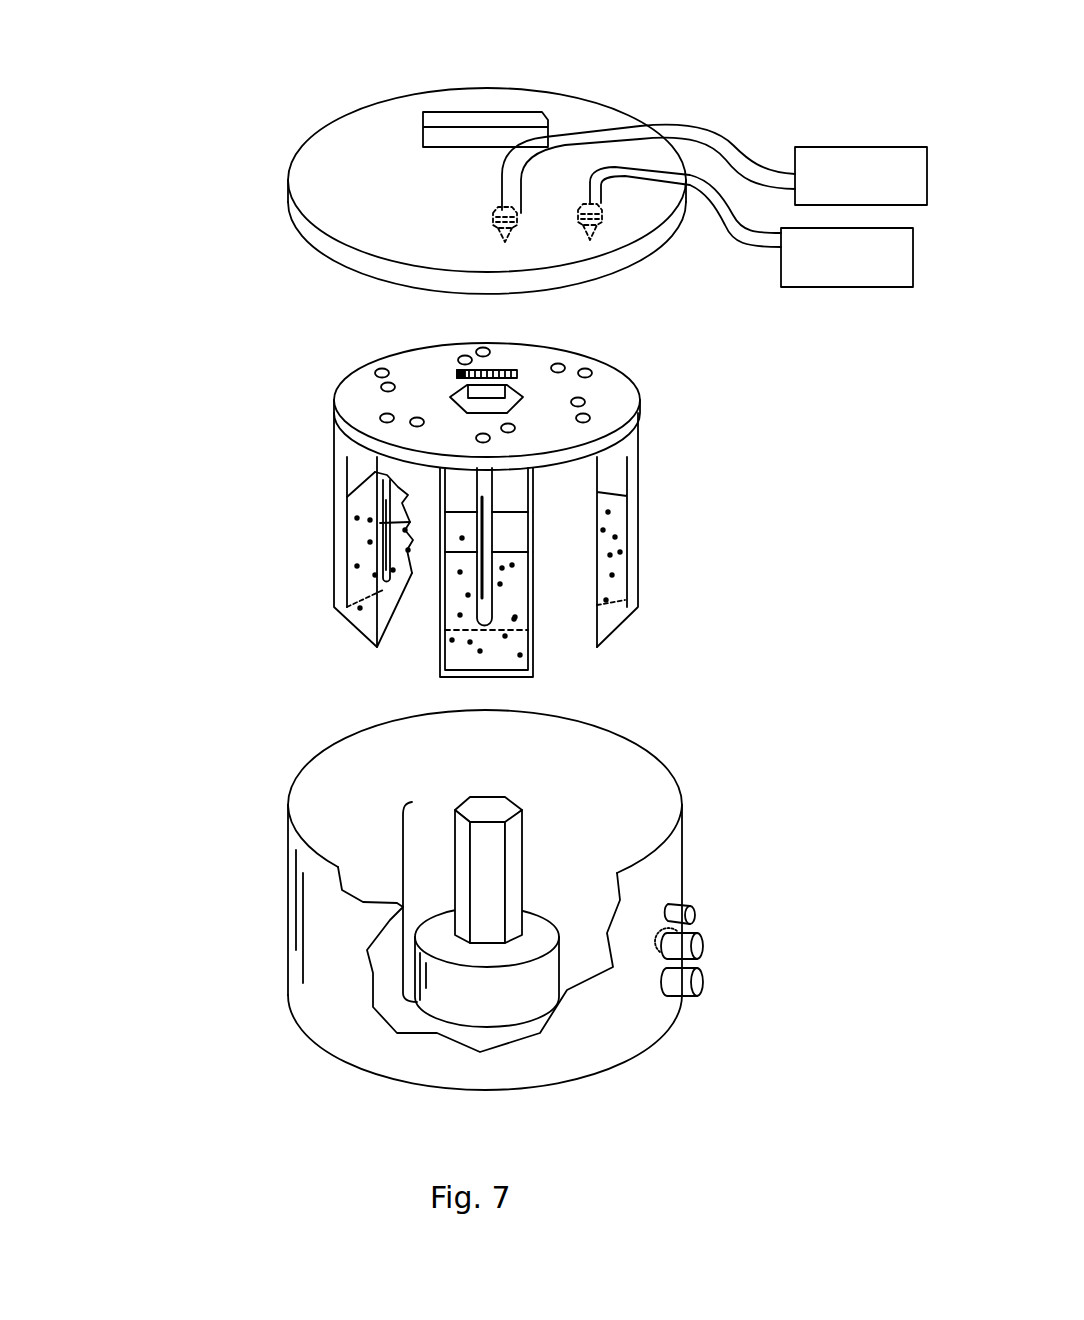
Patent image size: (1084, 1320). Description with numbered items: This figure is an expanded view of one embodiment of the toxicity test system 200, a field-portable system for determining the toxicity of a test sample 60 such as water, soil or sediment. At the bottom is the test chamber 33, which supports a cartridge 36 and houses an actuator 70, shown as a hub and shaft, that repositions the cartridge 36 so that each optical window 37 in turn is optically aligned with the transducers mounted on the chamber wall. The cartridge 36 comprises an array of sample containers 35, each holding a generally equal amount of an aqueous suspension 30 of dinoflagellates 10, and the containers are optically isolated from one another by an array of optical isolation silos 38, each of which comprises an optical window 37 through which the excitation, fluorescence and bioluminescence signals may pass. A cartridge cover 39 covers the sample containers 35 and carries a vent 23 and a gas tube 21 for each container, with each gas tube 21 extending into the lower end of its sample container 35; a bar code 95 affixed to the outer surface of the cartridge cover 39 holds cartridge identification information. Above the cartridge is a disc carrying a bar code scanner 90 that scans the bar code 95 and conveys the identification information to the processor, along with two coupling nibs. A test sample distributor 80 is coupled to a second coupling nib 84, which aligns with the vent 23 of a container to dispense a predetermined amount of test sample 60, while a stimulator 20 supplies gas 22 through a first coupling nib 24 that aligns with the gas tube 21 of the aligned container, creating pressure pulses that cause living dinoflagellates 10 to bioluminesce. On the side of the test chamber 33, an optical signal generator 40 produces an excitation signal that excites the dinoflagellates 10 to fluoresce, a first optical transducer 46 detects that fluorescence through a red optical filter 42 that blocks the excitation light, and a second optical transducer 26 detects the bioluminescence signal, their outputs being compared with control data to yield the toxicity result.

The toxicity test system 200 is at (156, 118).
The bar code scanner 90 is at (530, 117).
The second coupling nib 84 is at (493, 236).
The first coupling nib 24 is at (613, 223).
The test sample distributor 80 is at (868, 147).
The test sample 60 is at (877, 191).
The stimulator 20 is at (847, 293).
The gas 22 is at (847, 257).
The cartridge cover 39 is at (340, 381).
The vent 23 is at (562, 364).
The bar code 95 is at (458, 374).
The sample containers 35 is at (460, 672).
The dinoflagellates 10 is at (357, 518).
The aqueous suspension 30 is at (357, 537).
The optical isolation silos 38 is at (533, 630).
The gas tube 21 is at (485, 497).
The optical window 37 is at (640, 442).
The cartridge 36 is at (777, 365).
The test chamber 33 is at (347, 790).
The actuator 70 is at (390, 903).
The optical signal generator 40 is at (697, 915).
The first optical transducer 46 is at (703, 950).
The second optical transducer 26 is at (703, 988).
The red optical filter 42 is at (653, 945).